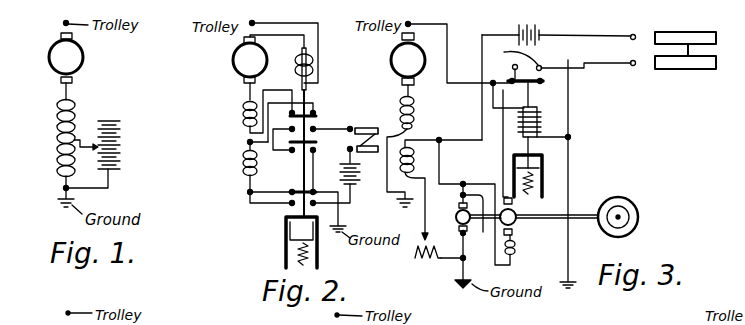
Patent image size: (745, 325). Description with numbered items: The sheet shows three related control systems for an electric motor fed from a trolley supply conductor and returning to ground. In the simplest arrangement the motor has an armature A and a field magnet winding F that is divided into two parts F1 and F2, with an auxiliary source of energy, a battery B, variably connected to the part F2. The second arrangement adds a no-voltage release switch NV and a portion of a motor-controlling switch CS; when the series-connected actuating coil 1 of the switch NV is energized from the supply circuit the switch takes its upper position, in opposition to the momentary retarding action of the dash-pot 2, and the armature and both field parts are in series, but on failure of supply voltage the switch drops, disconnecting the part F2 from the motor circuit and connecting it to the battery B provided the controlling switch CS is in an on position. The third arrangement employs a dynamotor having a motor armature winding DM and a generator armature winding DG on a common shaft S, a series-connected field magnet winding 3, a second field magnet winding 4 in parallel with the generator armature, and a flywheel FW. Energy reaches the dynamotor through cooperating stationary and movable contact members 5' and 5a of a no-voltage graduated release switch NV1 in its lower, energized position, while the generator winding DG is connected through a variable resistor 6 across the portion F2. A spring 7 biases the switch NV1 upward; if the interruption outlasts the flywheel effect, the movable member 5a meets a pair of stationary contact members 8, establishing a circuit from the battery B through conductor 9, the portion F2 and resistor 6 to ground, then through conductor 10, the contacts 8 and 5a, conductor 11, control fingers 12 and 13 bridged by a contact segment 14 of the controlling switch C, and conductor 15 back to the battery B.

In FIG. 1, the armature A is at (66, 58).
In FIG. 2, the armature A is at (250, 60).
In FIG. 3, the armature A is at (408, 59).
In FIG. 1, the part of field magnet winding F1 is at (56, 118).
In FIG. 2, the part of field magnet winding F1 is at (243, 116).
In FIG. 3, the part of field magnet winding F1 is at (414, 120).
In FIG. 1, the field magnet winding F is at (48, 139).
In FIG. 1, the part of field magnet winding F2 is at (56, 168).
In FIG. 2, the part of field magnet winding F2 is at (243, 163).
In FIG. 3, the part of field magnet winding F2 is at (414, 160).
In FIG. 1, the battery B is at (102, 154).
In FIG. 2, the battery B is at (343, 176).
In FIG. 3, the battery B is at (556, 32).
In FIG. 2, the actuating coil 1 is at (300, 60).
In FIG. 2, the no-voltage release switch NV is at (310, 153).
In FIG. 2, the motor-controlling switch CS is at (366, 132).
In FIG. 2, the dash-pot 2 is at (318, 260).
In FIG. 3, the dash-pot 2 is at (544, 160).
In FIG. 3, the conductor 9 is at (481, 120).
In FIG. 3, the stationary contact members 8 is at (516, 63).
In FIG. 3, the conductor 15 is at (584, 48).
In FIG. 3, the control finger 13 is at (622, 49).
In FIG. 3, the conductor 11 is at (600, 65).
In FIG. 3, the control finger 12 is at (633, 67).
In FIG. 3, the controlling-switch C is at (690, 70).
In FIG. 3, the contact segment 14 is at (668, 70).
In FIG. 3, the stationary contact member 5' is at (508, 90).
In FIG. 3, the movable contact member 5a is at (541, 83).
In FIG. 3, the no-voltage graduated release switch NV1 is at (536, 124).
In FIG. 3, the spring 7 is at (532, 183).
In FIG. 3, the generator armature winding DG is at (455, 218).
In FIG. 3, the second field magnet winding 4 is at (473, 228).
In FIG. 3, the motor armature winding DM is at (522, 165).
In FIG. 3, the series-connected field magnet winding 3 is at (516, 249).
In FIG. 3, the variable resistor 6 is at (425, 262).
In FIG. 3, the shaft S is at (534, 206).
In FIG. 3, the flywheel FW is at (640, 216).
In FIG. 3, the conductor 10 is at (568, 248).